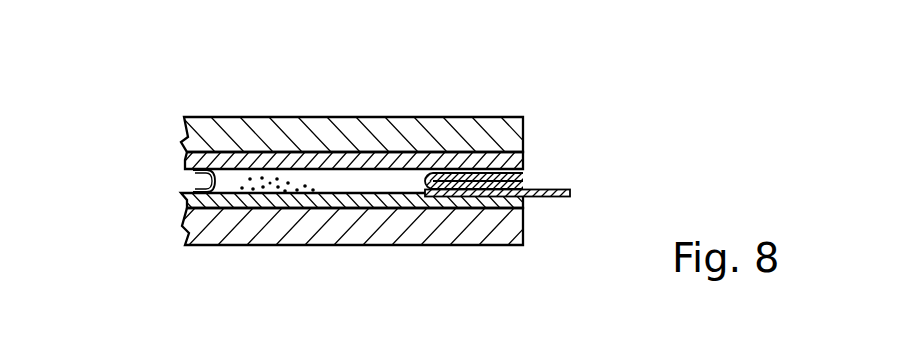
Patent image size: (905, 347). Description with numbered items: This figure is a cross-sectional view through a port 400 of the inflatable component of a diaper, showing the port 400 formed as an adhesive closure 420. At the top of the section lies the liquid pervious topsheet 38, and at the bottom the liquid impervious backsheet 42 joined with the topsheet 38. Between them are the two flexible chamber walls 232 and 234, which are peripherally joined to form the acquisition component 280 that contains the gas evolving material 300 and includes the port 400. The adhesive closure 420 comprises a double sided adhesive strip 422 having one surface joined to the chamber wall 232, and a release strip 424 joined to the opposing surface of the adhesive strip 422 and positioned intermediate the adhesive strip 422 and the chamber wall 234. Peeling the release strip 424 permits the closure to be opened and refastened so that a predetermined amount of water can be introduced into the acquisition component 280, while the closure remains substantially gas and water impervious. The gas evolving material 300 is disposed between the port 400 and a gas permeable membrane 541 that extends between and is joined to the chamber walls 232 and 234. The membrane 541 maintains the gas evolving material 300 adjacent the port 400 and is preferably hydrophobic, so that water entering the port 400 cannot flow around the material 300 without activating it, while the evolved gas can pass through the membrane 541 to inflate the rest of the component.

The topsheet 38 is at (372, 127).
The backsheet 42 is at (325, 245).
The chamber wall 232 is at (187, 163).
The chamber wall 234 is at (187, 203).
The acquisition component 280 is at (348, 175).
The gas evolving material 300 is at (257, 167).
The port 400 is at (556, 174).
The adhesive closure 420 is at (538, 171).
The double sided adhesive strip 422 is at (462, 173).
The release strip 424 is at (550, 198).
The gas permeable membrane 541 is at (195, 183).